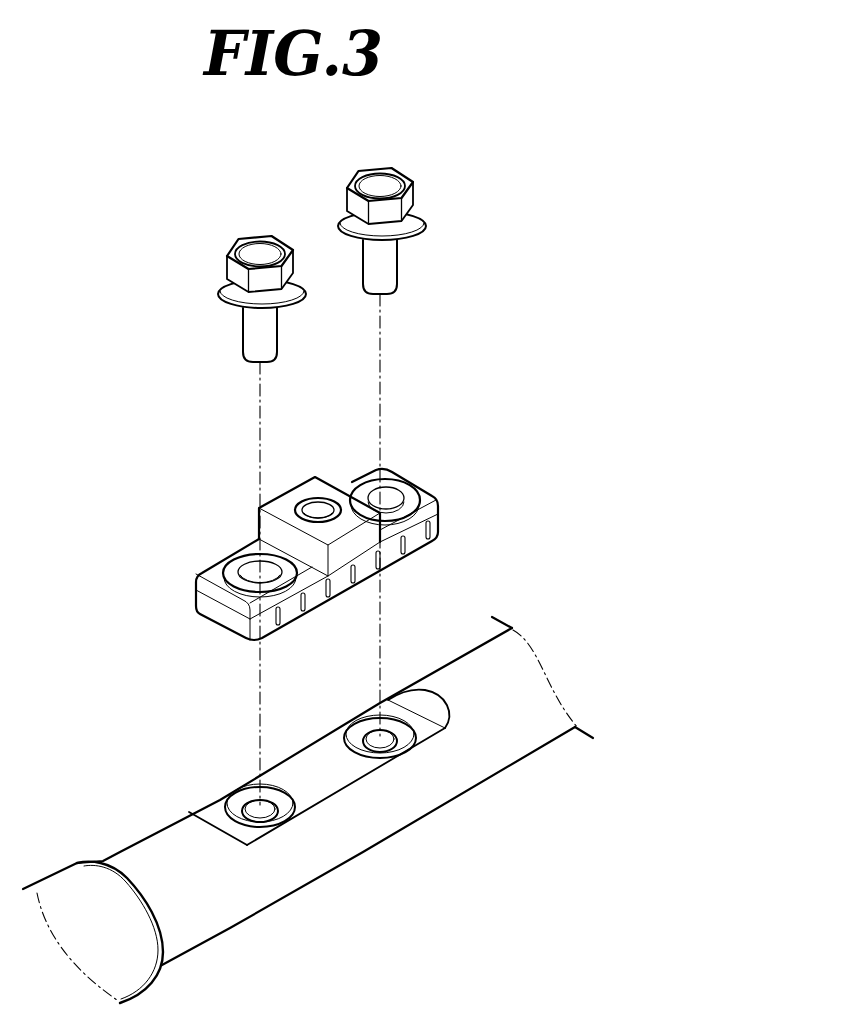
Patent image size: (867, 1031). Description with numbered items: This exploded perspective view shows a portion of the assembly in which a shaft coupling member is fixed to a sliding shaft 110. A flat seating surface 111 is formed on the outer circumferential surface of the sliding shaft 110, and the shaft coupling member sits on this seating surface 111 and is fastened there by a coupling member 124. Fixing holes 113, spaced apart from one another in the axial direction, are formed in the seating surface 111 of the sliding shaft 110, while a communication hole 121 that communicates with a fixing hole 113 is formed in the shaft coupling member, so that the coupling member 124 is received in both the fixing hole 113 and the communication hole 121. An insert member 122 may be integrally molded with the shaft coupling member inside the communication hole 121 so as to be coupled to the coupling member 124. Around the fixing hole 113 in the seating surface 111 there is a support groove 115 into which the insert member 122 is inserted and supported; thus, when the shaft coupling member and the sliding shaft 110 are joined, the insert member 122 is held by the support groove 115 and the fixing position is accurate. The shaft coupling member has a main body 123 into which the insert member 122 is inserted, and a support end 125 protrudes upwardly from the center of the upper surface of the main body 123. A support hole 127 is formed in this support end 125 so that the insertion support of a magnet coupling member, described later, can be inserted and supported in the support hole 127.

The sliding shaft 110 is at (262, 895).
The seating surface 111 is at (337, 775).
The fixing hole 113 is at (273, 800).
The support groove 115 is at (245, 800).
The communication hole 121 is at (218, 570).
The insert member 122 is at (394, 498).
The main body 123 is at (203, 602).
The coupling member 124 is at (397, 262).
The support end 125 is at (277, 500).
The support hole 127 is at (320, 505).